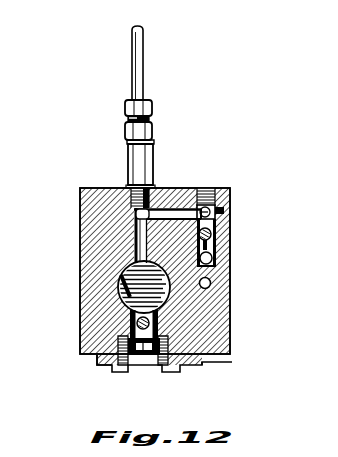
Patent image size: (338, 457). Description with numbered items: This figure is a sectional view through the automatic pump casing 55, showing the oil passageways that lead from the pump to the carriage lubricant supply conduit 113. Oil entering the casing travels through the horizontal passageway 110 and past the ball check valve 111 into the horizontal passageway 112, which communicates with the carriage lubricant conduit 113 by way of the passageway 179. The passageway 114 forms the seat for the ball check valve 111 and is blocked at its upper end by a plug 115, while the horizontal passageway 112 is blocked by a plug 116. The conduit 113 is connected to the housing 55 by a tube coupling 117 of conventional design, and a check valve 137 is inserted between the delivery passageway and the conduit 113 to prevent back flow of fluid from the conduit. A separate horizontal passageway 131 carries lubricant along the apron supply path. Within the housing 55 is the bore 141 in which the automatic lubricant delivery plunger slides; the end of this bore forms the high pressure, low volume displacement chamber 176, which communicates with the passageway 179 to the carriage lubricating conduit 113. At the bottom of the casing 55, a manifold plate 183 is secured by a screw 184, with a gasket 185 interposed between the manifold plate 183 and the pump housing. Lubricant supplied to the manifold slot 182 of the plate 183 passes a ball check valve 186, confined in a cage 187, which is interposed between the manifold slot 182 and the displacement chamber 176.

The automatic pump casing 55 is at (233, 322).
The horizontal passageway 110 is at (232, 267).
The ball check valve 111 is at (212, 248).
The horizontal passageway 112 is at (181, 211).
The carriage lubricant conduit 113 is at (139, 55).
The passageway 114 is at (211, 228).
The plug 115 is at (213, 189).
The plug 116 is at (224, 210).
The tube coupling 117 is at (154, 130).
The horizontal passageway 131 is at (211, 283).
The check valve 137 is at (127, 159).
The bore 141 is at (136, 272).
The high pressure, low volume displacement chamber 176 is at (124, 264).
The passageway 179 is at (136, 211).
The manifold slot 182 is at (152, 356).
The manifold plate 183 is at (186, 360).
The screw 184 is at (182, 370).
The gasket 185 is at (103, 358).
The ball check valve 186 is at (147, 338).
The cage 187 is at (136, 327).